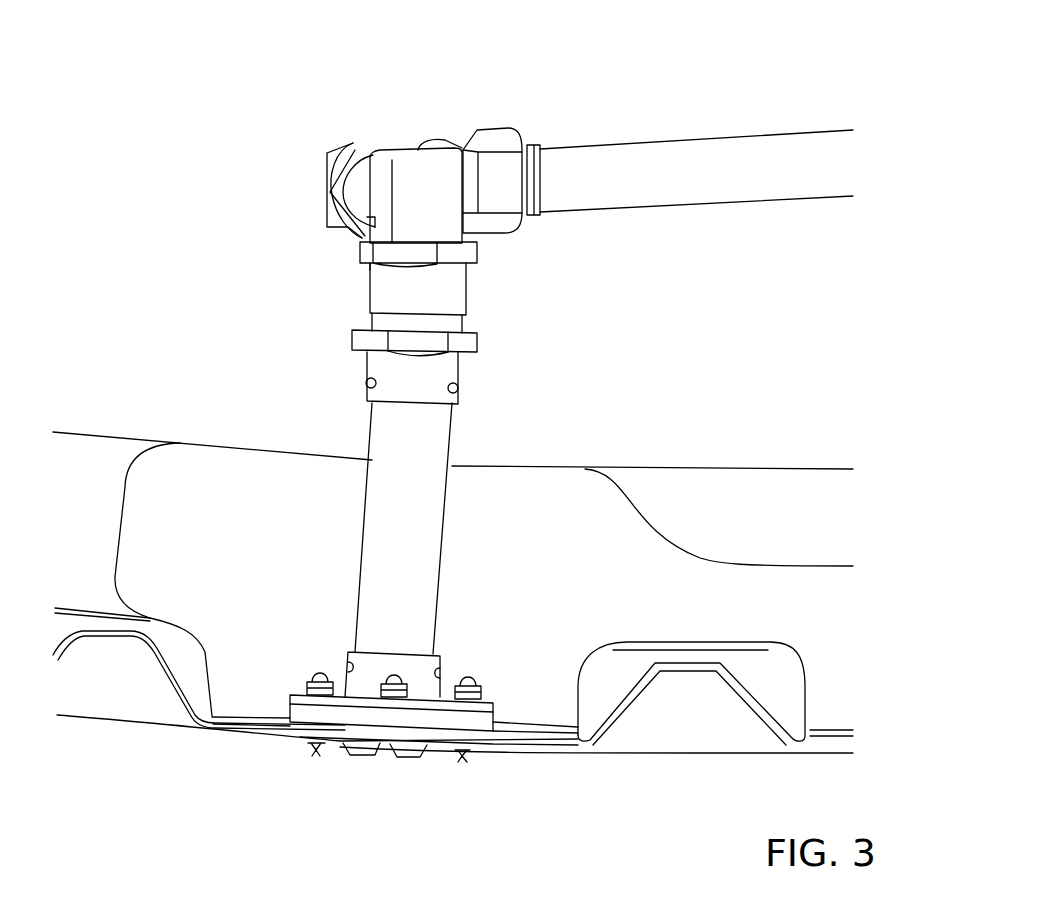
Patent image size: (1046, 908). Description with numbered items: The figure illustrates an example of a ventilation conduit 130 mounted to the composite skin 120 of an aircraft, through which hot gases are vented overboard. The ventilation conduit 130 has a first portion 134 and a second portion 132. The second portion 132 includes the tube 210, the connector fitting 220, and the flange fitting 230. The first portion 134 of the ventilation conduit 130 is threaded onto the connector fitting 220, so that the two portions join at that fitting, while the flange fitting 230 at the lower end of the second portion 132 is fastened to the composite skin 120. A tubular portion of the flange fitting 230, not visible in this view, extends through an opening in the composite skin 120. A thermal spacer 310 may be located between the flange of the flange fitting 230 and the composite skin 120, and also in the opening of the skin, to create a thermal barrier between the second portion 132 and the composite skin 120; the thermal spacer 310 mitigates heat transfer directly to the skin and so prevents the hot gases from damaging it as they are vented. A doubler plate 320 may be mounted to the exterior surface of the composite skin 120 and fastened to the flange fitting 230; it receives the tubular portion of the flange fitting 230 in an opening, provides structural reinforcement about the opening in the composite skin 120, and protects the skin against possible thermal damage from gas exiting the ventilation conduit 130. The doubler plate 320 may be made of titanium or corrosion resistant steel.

The composite skin 120 is at (633, 753).
The ventilation conduit 130 is at (449, 127).
The second portion 132 is at (398, 464).
The first portion 134 is at (679, 167).
The tube 210 is at (438, 573).
The connector fitting 220 is at (470, 332).
The flange fitting 230 is at (483, 697).
The thermal spacer 310 is at (288, 712).
The doubler plate 320 is at (375, 756).